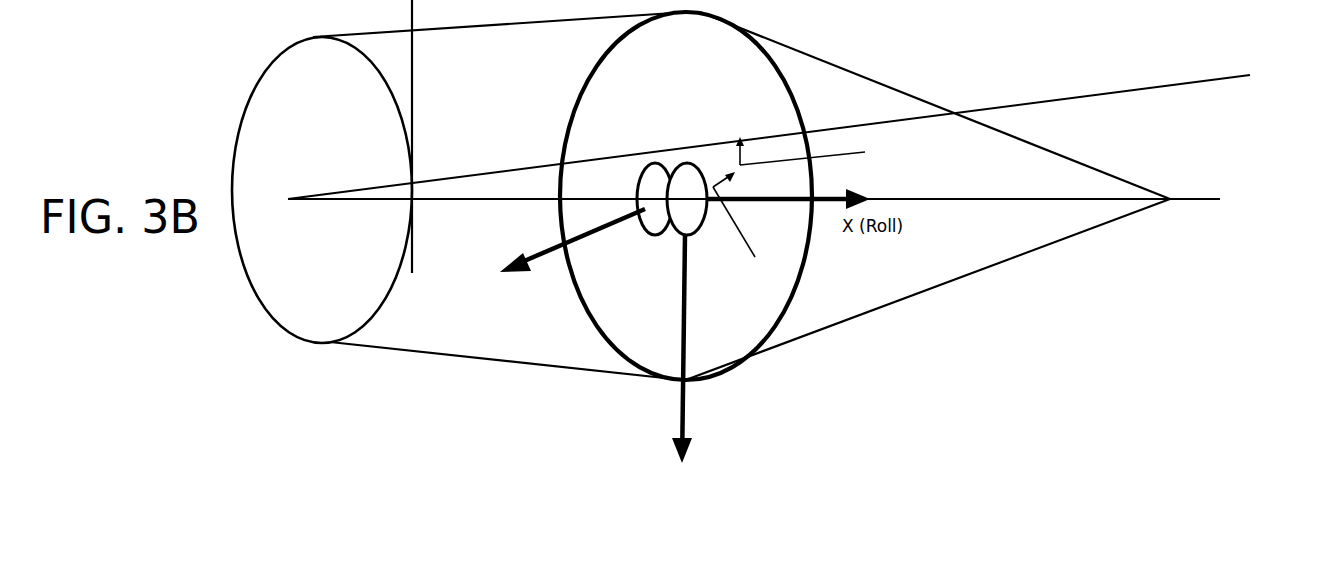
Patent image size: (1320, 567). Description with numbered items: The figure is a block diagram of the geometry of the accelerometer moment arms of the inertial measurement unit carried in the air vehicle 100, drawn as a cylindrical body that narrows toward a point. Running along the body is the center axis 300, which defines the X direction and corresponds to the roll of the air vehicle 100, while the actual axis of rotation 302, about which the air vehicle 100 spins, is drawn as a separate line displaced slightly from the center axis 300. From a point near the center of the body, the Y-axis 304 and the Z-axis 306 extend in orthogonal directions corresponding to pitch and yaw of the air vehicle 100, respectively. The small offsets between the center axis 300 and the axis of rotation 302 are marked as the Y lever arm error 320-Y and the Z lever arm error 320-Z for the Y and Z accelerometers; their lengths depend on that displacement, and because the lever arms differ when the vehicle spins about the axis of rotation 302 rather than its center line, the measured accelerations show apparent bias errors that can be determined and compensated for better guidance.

The air vehicle 100 is at (413, 352).
The center axis 300 is at (1180, 201).
The axis of rotation 302 is at (1008, 107).
The Y-axis 304 is at (548, 247).
The Z-axis 306 is at (677, 405).
The dlev_z 320-Z is at (858, 153).
The dlev_y 320-Y is at (747, 235).